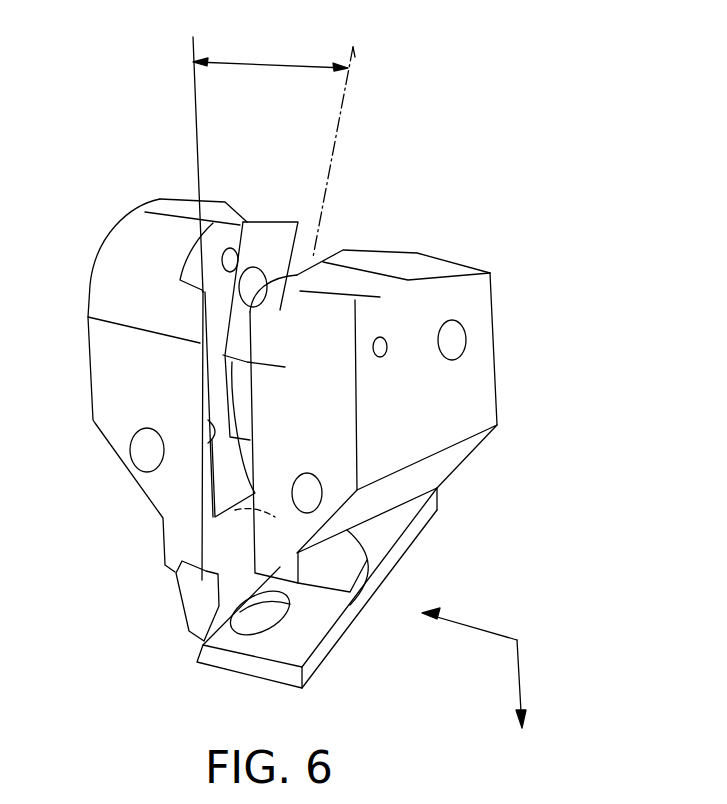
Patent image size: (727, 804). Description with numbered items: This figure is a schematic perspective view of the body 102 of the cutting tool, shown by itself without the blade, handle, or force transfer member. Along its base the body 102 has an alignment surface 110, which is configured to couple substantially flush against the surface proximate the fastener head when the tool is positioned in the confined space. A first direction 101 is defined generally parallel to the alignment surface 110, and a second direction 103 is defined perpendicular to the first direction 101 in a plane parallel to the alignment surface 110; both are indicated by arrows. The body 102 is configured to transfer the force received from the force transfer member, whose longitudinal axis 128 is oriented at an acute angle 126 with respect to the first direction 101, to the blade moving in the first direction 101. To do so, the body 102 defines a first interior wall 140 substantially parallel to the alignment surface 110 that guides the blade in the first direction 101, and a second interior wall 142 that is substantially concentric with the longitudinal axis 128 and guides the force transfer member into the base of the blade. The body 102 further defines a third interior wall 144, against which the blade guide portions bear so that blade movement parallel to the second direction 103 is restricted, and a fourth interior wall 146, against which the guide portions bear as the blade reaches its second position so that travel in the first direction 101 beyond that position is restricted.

The first direction 101 is at (519, 662).
The body 102 is at (500, 245).
The second direction 103 is at (468, 625).
The alignment surface 110 is at (233, 610).
The acute angle 126 is at (276, 62).
The longitudinal axis 128 is at (355, 57).
The first interior wall 140 is at (230, 438).
The second interior wall 142 is at (288, 235).
The third interior wall 144 is at (212, 267).
The fourth interior wall 146 is at (225, 497).